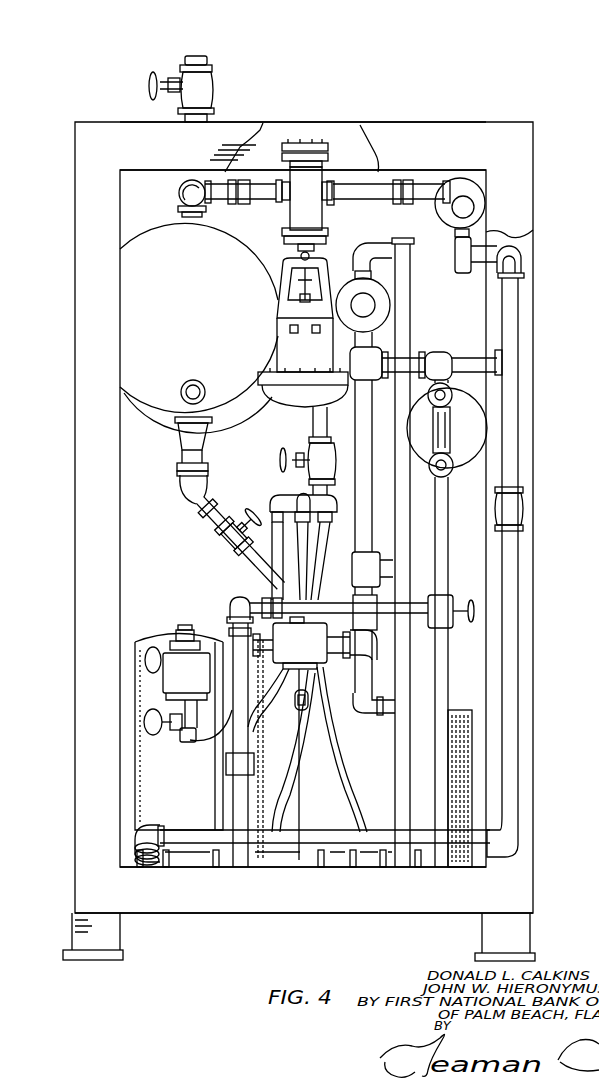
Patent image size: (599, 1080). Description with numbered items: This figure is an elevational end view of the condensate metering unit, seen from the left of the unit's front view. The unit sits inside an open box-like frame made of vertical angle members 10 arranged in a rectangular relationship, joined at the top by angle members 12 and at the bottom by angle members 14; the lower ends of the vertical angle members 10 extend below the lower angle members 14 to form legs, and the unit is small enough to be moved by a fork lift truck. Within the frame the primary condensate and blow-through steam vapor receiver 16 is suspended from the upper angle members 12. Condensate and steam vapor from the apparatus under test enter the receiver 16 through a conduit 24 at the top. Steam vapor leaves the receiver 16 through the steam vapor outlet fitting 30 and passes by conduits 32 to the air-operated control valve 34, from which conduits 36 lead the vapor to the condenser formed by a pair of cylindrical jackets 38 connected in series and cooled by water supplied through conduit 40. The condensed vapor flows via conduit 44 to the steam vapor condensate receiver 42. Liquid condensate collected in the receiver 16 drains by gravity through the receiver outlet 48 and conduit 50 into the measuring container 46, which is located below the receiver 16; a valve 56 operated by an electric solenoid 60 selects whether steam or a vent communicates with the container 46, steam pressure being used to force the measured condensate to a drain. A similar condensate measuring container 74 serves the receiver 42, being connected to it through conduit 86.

The vertical angle members 10 is at (528, 210).
The upper angle members 12 is at (500, 131).
The lower angle members 14 is at (383, 905).
The receiver 16 is at (196, 334).
The conduit 24 is at (192, 56).
The steam vapor outlet fitting 30 is at (200, 217).
The conduits 32 is at (258, 196).
The air-operated control valve 34 is at (300, 216).
The conduits 36 is at (368, 193).
The cylindrical jackets 38 is at (453, 218).
The conduit 40 is at (505, 285).
The receiver 42 is at (474, 447).
The conduit 44 is at (412, 355).
The measuring container 46 is at (190, 799).
The receiver outlet 48 is at (178, 434).
The conduit 50 is at (243, 556).
The valve 56 is at (190, 625).
The electric solenoid 60 is at (188, 685).
The condensate measuring container 74 is at (455, 712).
The conduit 86 is at (440, 554).